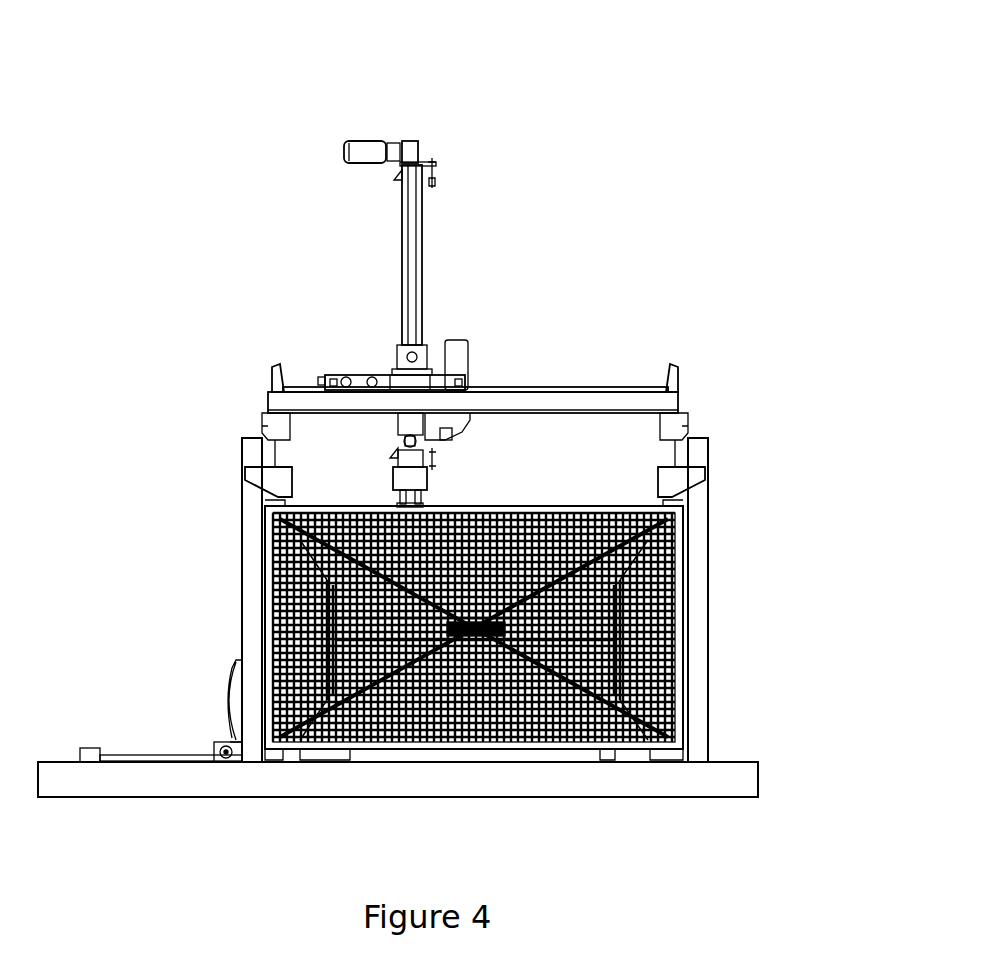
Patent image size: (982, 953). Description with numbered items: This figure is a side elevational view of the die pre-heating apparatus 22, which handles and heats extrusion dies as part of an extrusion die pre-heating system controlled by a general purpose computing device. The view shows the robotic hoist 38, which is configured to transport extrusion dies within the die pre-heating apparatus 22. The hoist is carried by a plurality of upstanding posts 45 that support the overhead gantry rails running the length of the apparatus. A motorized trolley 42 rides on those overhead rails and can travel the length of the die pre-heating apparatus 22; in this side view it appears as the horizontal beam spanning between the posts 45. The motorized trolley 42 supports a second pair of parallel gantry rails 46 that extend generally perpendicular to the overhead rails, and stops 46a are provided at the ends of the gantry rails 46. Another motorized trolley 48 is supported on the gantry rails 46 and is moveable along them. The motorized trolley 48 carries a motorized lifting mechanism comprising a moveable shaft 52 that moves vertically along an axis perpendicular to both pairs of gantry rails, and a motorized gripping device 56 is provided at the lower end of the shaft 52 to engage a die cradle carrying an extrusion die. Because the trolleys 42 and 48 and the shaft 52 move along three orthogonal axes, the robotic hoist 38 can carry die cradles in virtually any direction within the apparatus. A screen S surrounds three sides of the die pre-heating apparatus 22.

The die pre-heating apparatus 22 is at (618, 116).
The robotic hoist 38 is at (472, 160).
The motorized trolley 42 is at (670, 405).
The upstanding posts 45 is at (256, 588).
The gantry rails 46 is at (570, 388).
The stops 46a is at (272, 378).
The motorized trolley 48 is at (365, 371).
The moveable shaft 52 is at (422, 268).
The motorized gripping device 56 is at (430, 480).
The screen S is at (682, 704).